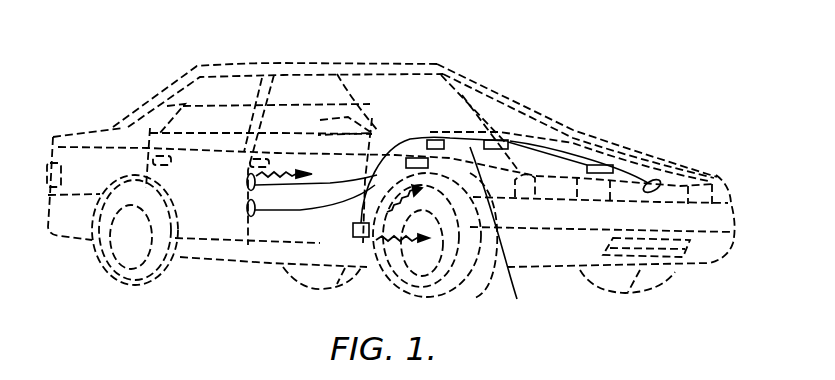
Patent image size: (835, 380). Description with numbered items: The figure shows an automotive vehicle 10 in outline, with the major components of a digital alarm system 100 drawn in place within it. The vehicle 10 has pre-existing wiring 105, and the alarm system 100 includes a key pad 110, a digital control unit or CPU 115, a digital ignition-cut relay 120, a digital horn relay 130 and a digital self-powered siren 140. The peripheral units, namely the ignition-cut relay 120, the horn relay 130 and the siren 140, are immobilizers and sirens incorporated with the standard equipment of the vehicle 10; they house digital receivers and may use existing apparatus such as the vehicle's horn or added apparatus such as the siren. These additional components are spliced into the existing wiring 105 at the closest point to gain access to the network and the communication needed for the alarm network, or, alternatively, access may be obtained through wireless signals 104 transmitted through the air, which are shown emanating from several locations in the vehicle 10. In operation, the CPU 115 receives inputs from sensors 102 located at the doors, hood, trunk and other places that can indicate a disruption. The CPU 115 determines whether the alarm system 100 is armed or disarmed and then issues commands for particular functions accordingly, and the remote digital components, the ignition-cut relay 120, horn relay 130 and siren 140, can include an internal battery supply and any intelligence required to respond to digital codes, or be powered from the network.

The alarm system 100 is at (100, 37).
The automotive vehicle 10 is at (57, 135).
The sensors 102 is at (660, 181).
The wireless signals 104 is at (280, 174).
The pre-existing wiring 105 is at (517, 299).
The key pad 110 is at (436, 140).
The CPU 115 is at (358, 226).
The digital ignition-cut relay 120 is at (594, 165).
The digital horn relay 130 is at (495, 140).
The digital self-powered siren 140 is at (410, 158).